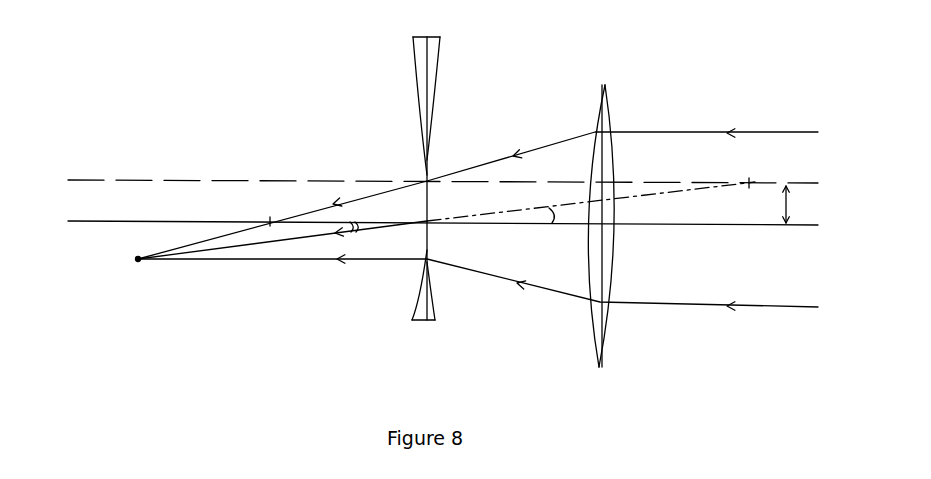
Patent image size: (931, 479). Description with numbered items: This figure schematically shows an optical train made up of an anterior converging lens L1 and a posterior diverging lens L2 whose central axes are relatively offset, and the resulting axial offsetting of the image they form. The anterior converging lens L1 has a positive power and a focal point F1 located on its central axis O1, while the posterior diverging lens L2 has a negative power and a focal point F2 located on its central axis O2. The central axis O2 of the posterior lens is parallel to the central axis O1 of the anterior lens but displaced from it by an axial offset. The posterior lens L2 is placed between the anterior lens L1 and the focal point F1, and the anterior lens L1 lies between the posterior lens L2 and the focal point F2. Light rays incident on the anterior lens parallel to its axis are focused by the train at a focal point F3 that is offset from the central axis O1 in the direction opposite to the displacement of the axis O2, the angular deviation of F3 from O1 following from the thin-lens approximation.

The anterior converging lens L1 is at (601, 244).
The posterior diverging lens L2 is at (426, 198).
The focal point of the anterior converging lens F1 is at (271, 209).
The focal point of the posterior diverging lens F2 is at (753, 174).
The focal point of the lens train F3 is at (139, 277).
The central axis of the anterior lens O1 is at (446, 223).
The central axis of the posterior lens O2 is at (447, 182).